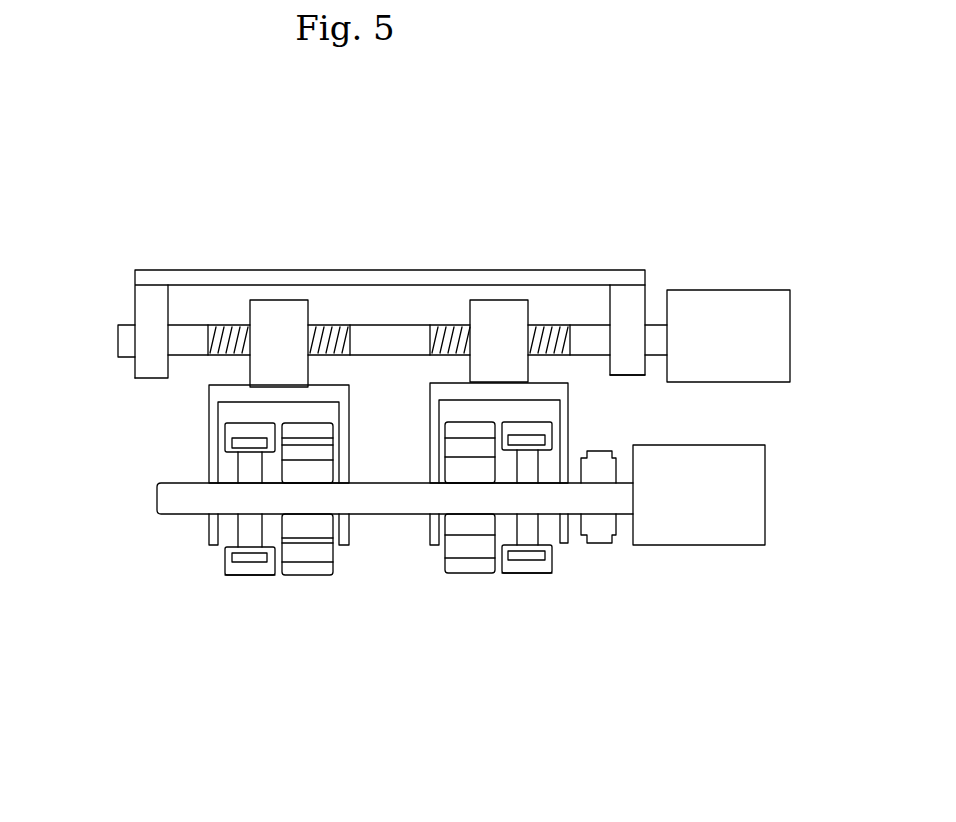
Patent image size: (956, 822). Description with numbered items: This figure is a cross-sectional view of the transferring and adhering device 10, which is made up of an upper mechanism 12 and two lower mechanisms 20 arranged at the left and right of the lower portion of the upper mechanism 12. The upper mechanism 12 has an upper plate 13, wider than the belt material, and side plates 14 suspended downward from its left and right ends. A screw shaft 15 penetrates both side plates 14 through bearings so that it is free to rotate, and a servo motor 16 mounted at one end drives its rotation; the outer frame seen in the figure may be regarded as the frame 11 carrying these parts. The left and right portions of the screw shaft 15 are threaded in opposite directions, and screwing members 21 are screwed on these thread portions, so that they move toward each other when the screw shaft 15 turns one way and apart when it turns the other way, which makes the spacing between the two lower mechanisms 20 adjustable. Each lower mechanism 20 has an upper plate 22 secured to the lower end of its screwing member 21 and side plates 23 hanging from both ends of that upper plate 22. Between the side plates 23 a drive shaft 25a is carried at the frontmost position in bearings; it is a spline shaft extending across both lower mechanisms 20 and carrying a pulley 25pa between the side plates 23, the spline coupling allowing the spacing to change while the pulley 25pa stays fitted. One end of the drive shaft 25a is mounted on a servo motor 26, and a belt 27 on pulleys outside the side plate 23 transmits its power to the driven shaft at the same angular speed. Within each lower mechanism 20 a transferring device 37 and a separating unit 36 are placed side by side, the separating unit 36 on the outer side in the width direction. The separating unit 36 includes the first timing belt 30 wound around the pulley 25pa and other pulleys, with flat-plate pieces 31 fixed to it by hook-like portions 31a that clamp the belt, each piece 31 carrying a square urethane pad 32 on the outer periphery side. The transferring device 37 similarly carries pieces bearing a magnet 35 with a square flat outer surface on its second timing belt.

The transferring and adhering device 10 is at (528, 212).
The frame 11 is at (443, 270).
The upper mechanism 12 is at (613, 277).
The upper plate 13 is at (170, 277).
The side plates 14 is at (143, 305).
The screw shafts 15 is at (362, 310).
The servo motors 16 is at (770, 300).
The lower mechanisms 20 is at (261, 671).
The screwing members 21 is at (277, 310).
The upper plate 22 is at (547, 392).
The side plates 23 is at (348, 415).
The drive shaft 25a is at (363, 514).
The pulley 25pa is at (243, 455).
The servo motor 26 is at (750, 513).
The belt 27 is at (603, 543).
The first timing belt 30 is at (230, 442).
The pieces 31 is at (227, 563).
The hook-like portions 31a is at (230, 550).
The pad 32 is at (207, 430).
The magnet 35 is at (458, 567).
The separating unit 36 is at (240, 577).
The transferring device 37 is at (312, 598).